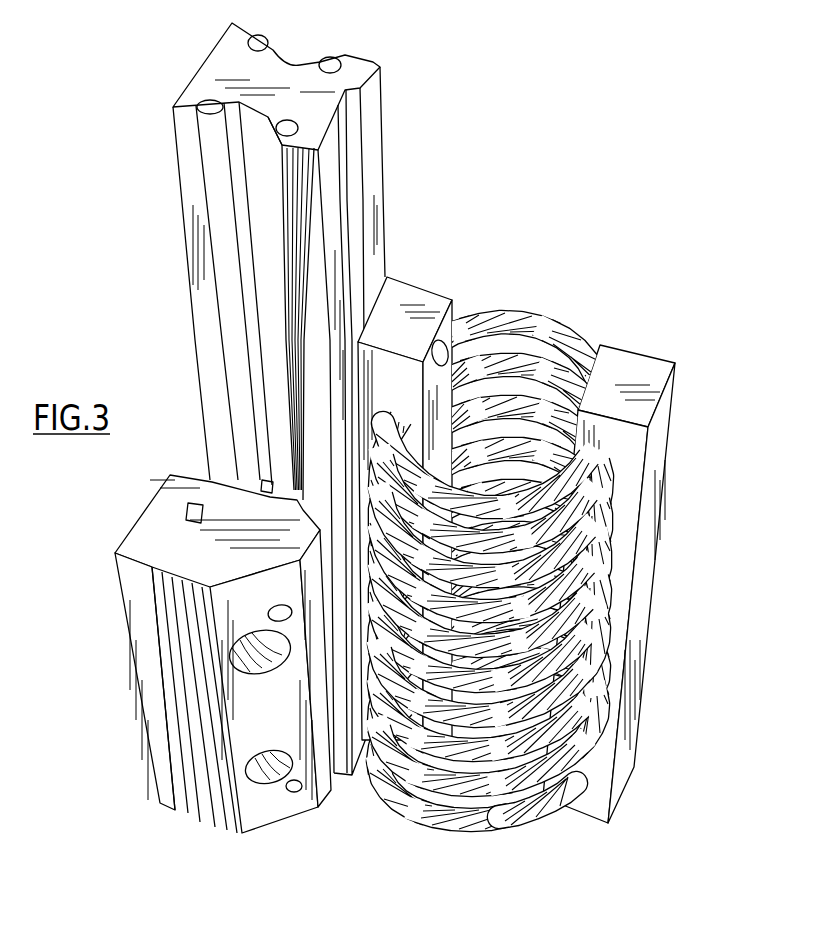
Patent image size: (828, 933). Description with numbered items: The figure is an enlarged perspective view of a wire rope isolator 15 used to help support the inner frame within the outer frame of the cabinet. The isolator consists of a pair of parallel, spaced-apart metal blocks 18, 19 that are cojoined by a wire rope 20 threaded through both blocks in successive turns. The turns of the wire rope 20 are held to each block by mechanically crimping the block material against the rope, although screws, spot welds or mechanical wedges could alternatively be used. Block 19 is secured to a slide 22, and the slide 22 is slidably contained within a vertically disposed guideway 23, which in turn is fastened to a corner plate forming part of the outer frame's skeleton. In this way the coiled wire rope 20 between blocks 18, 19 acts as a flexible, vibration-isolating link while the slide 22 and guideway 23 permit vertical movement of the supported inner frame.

The coil assembly 15 is at (672, 507).
The metal block 18 is at (647, 353).
The metal block 19 is at (420, 289).
The wire rope 20 is at (556, 316).
The slide 22 is at (383, 187).
The guideway 23 is at (128, 650).